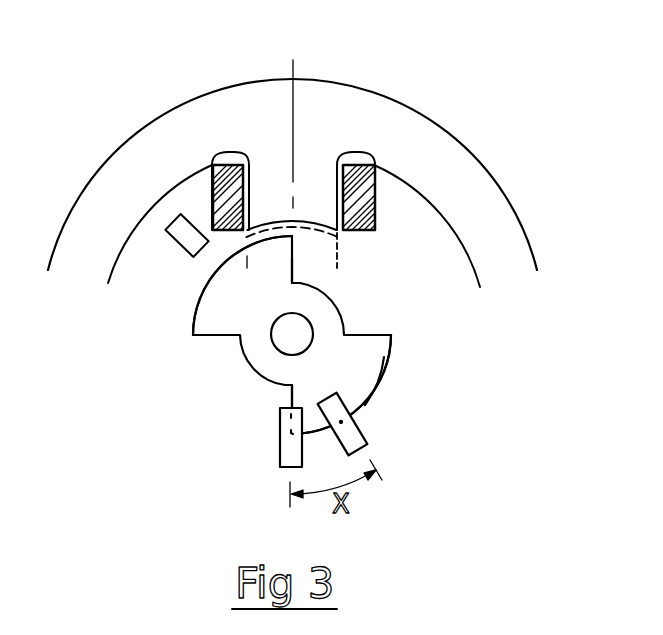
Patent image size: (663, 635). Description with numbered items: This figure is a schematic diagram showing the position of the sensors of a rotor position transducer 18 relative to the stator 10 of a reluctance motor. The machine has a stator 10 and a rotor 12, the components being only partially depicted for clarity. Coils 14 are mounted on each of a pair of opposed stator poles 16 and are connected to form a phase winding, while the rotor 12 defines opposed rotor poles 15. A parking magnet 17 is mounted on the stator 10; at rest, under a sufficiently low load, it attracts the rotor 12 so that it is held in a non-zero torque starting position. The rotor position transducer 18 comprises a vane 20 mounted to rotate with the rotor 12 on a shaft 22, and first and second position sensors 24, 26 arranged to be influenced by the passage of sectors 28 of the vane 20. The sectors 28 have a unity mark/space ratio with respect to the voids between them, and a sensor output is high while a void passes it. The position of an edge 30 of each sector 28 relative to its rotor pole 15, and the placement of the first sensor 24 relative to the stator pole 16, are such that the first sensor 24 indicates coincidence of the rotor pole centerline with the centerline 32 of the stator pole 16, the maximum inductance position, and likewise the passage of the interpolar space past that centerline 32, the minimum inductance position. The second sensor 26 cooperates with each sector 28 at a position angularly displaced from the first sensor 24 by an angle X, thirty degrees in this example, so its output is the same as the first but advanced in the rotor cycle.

The stator 10 is at (503, 210).
The rotor 12 is at (310, 278).
The coils 14 is at (379, 163).
The rotor poles 15 is at (332, 264).
The stator poles 16 is at (285, 208).
The parking magnet 17 is at (165, 225).
The rotor position transducer 18 is at (430, 390).
The vane 20 is at (243, 315).
The shaft 22 is at (271, 346).
The first position sensor 24 is at (280, 468).
The second position sensor 26 is at (370, 462).
The sectors 28 is at (218, 282).
The edge 30 is at (292, 258).
The centerline 32 is at (293, 72).